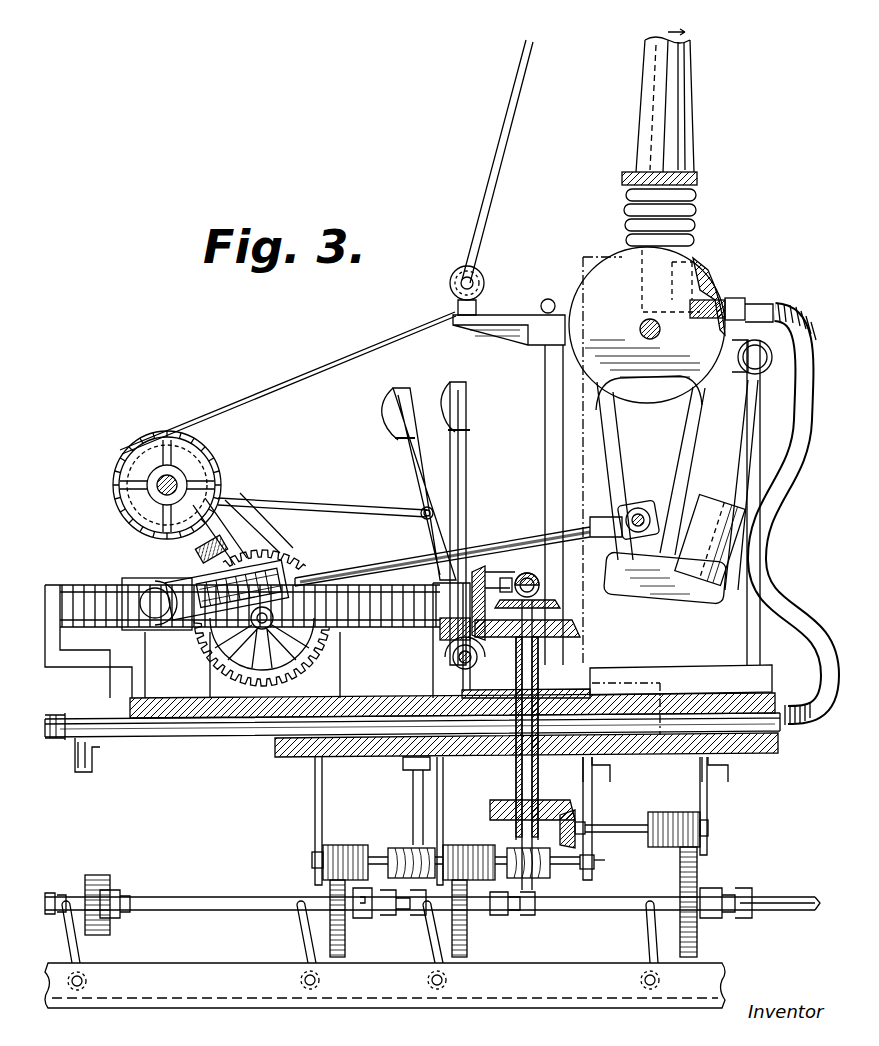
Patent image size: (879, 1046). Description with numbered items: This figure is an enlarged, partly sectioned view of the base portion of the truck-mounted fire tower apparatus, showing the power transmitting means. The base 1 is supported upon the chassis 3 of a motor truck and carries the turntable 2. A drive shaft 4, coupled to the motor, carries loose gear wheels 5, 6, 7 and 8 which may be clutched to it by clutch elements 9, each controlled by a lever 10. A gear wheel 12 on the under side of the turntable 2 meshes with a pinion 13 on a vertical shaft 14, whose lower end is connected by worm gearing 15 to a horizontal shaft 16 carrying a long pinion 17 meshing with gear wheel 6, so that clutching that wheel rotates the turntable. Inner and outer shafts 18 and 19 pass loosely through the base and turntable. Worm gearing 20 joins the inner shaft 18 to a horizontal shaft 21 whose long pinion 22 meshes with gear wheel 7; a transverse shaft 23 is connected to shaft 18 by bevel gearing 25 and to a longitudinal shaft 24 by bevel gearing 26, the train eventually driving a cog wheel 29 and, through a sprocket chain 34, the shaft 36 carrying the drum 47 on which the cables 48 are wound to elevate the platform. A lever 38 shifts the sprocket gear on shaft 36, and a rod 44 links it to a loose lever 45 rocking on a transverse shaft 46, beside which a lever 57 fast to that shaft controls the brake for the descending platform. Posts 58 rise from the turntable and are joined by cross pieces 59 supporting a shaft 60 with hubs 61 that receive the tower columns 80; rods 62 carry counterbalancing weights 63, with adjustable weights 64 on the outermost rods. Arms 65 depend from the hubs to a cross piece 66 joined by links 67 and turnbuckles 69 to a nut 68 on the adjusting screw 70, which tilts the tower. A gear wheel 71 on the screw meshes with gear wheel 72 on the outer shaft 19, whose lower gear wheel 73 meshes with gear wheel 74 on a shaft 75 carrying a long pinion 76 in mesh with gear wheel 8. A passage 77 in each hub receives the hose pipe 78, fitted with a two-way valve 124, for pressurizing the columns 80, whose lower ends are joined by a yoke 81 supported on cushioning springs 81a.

The base 1 is at (278, 760).
The turntable 2 is at (250, 740).
The chassis 3 is at (185, 1000).
The drive shaft 4 is at (178, 896).
The gear wheel 5 is at (108, 935).
The gear wheel 6 is at (345, 957).
The gear wheel 7 is at (465, 958).
The gear wheel 8 is at (698, 958).
The clutch elements 9 is at (78, 890).
The lever 10 is at (300, 942).
The gear wheel 12 is at (650, 740).
The pinion 13 is at (348, 760).
The vertical shaft 14 is at (413, 790).
The worm gearing 15 is at (392, 850).
The horizontal shaft 16 is at (311, 860).
The long pinion 17 is at (348, 845).
The inner shaft 18 is at (520, 768).
The outer shaft 19 is at (520, 788).
The worm gearing 20 is at (545, 875).
The horizontal shaft 21 is at (605, 862).
The long pinion 22 is at (465, 848).
The transverse shaft 23 is at (540, 580).
The longitudinal shaft 24 is at (483, 588).
The bevel gearing 25 is at (560, 604).
The bevel gearing 26 is at (519, 574).
The cog wheel 29 is at (267, 624).
The sprocket chain 34 is at (165, 545).
The shaft 36 is at (145, 486).
The lever 38 is at (232, 525).
The rod 44 is at (290, 505).
The lever 45 is at (400, 462).
The transverse shaft 46 is at (452, 662).
The drum 47 is at (205, 455).
The cables 48 is at (300, 372).
The lever 57 is at (470, 478).
The posts 58 is at (543, 492).
The cross pieces 59 is at (522, 345).
The shaft 60 is at (640, 327).
The hubs 61 is at (615, 280).
The rods 62 is at (608, 448).
The weights 63 is at (664, 590).
The weights 64 is at (699, 500).
The arms 65 is at (641, 452).
The cross piece 66 is at (635, 508).
The links 67 is at (395, 565).
The nut 68 is at (145, 632).
The turnbuckles 69 is at (190, 580).
The adjusting screw 70 is at (118, 585).
The gear wheel 71 is at (450, 618).
The gear wheel 72 is at (585, 634).
The gear wheel 73 is at (500, 808).
The gear wheel 74 is at (582, 818).
The shaft 75 is at (710, 828).
The long pinion 76 is at (672, 812).
The passage 77 is at (712, 282).
The hose pipe 78 is at (782, 466).
The columns 80 is at (655, 74).
The yoke 81 is at (697, 180).
The springs 81a is at (696, 220).
The two-way valve 124 is at (95, 755).